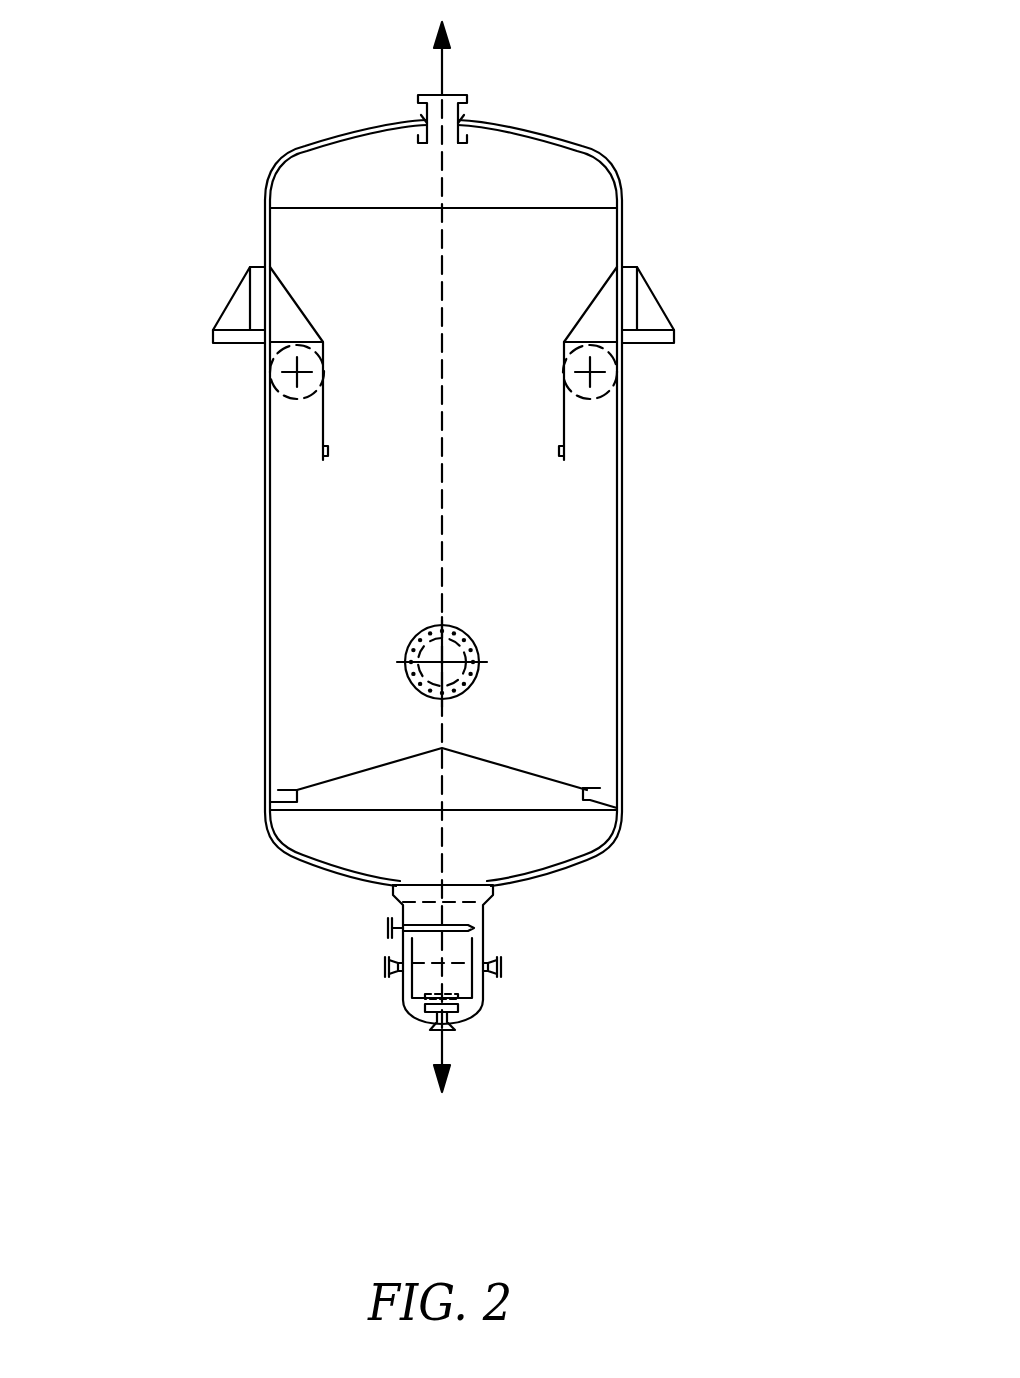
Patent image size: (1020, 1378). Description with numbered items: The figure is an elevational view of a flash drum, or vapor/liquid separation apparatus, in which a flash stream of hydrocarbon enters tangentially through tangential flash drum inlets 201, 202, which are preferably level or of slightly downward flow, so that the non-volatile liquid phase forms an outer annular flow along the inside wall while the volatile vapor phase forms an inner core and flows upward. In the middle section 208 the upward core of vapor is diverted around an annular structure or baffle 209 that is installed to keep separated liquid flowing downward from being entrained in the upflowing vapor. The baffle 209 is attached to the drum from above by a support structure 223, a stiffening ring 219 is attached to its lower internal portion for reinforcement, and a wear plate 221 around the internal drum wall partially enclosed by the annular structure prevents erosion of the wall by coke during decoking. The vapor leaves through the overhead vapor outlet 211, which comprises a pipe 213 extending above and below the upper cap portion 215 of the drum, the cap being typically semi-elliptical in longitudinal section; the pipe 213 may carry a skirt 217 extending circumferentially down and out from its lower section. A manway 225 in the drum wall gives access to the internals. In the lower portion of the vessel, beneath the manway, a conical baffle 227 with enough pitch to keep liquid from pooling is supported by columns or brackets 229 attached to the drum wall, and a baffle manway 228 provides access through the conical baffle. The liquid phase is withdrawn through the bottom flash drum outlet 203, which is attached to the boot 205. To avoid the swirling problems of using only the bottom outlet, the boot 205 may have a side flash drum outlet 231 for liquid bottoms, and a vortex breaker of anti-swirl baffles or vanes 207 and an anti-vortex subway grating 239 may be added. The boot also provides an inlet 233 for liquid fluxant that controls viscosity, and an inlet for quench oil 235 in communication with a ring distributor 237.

The tangential flash drum inlet 201 is at (288, 392).
The tangential flash drum inlet 202 is at (592, 400).
The bottom flash drum outlet 203 is at (447, 1030).
The boot 205 is at (506, 923).
The anti-swirl baffles or vanes 207 is at (400, 988).
The middle section 208 is at (442, 373).
The annular structure or baffle 209 is at (323, 427).
The upper flash drum outlet or overhead vapor outlet 211 is at (447, 93).
The pipe 213 is at (425, 118).
The upper cap portion 215 is at (555, 165).
The skirt 217 is at (410, 130).
The stiffening ring 219 is at (560, 447).
The wear plate 221 is at (268, 452).
The support structure 223 is at (597, 325).
The manway 225 is at (405, 655).
The conical baffle 227 is at (348, 775).
The baffle manway 228 is at (535, 767).
The columns or brackets 229 is at (290, 797).
The side flash drum outlet 231 is at (385, 968).
The inlet for liquid fluxant 233 is at (502, 967).
The inlet for quench oil 235 is at (385, 926).
The ring distributor 237 is at (410, 947).
The anti-vortex subway grating 239 is at (430, 1023).